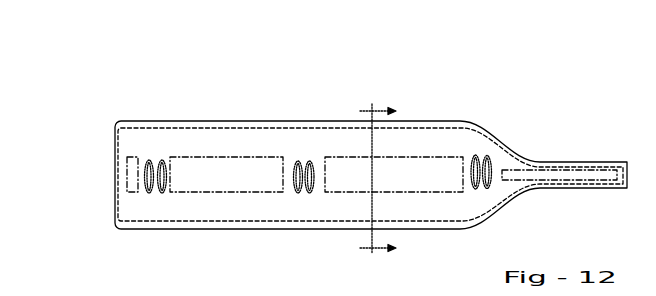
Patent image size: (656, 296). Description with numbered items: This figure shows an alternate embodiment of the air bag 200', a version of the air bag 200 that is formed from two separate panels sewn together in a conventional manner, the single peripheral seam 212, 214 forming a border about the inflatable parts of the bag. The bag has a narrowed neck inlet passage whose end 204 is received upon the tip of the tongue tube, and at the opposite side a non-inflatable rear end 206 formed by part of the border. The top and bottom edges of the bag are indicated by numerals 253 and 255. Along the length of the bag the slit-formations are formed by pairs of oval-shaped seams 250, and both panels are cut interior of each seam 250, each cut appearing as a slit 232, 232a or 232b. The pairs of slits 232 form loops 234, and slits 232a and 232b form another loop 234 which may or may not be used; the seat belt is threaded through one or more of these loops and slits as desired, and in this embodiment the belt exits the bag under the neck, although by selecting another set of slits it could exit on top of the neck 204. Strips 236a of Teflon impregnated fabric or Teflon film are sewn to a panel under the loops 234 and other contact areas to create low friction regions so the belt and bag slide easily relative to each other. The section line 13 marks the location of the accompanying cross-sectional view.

The air bag 200 is at (371, 154).
The air bag 200' is at (395, 67).
The end 204 is at (612, 189).
The non-inflatable end border 206 is at (115, 196).
The peripheral seam 212 is at (213, 156).
The peripheral seam 214 is at (245, 222).
The slit 232 is at (148, 160).
The slit 232a is at (478, 191).
The slit 232b is at (477, 157).
The loop 234 is at (162, 160).
The strip 236a is at (123, 180).
The oval-shaped seam 250 is at (149, 193).
The top edge 253 is at (224, 120).
The bottom edge 255 is at (229, 230).
The section line 13- 13 is at (391, 187).